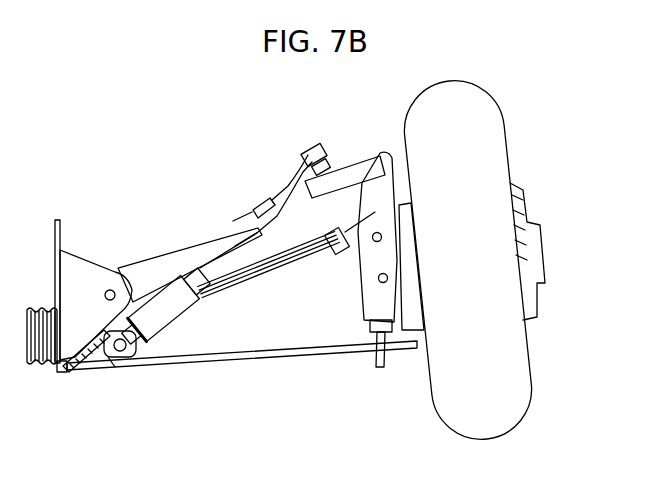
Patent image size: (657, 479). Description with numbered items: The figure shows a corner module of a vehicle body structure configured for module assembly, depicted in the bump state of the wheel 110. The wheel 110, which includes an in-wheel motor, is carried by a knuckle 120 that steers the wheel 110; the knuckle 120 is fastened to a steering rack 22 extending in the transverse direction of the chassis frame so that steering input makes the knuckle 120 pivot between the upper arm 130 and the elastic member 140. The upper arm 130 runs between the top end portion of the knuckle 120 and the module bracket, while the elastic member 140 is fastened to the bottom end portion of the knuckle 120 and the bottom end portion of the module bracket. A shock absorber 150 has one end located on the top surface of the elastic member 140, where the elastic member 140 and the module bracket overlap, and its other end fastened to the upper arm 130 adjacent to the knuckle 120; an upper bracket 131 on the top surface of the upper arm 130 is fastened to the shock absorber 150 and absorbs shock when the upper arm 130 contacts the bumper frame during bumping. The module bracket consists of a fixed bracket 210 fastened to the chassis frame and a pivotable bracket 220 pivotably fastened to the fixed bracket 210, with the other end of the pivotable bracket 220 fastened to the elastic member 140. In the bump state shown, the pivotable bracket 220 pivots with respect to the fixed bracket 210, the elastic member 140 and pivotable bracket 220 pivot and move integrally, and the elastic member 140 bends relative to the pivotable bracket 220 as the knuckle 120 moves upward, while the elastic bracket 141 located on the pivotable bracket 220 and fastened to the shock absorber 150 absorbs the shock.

The wheel 110 is at (505, 127).
The knuckle 120 is at (369, 160).
The upper arm 130 is at (160, 262).
The upper bracket 131 is at (258, 203).
The shock absorber 150 is at (180, 290).
The steering rack 22 is at (267, 272).
The fixed bracket 210 is at (83, 255).
The pivotable bracket 220 is at (95, 357).
The elastic bracket 141 is at (108, 352).
The elastic member 140 is at (207, 360).